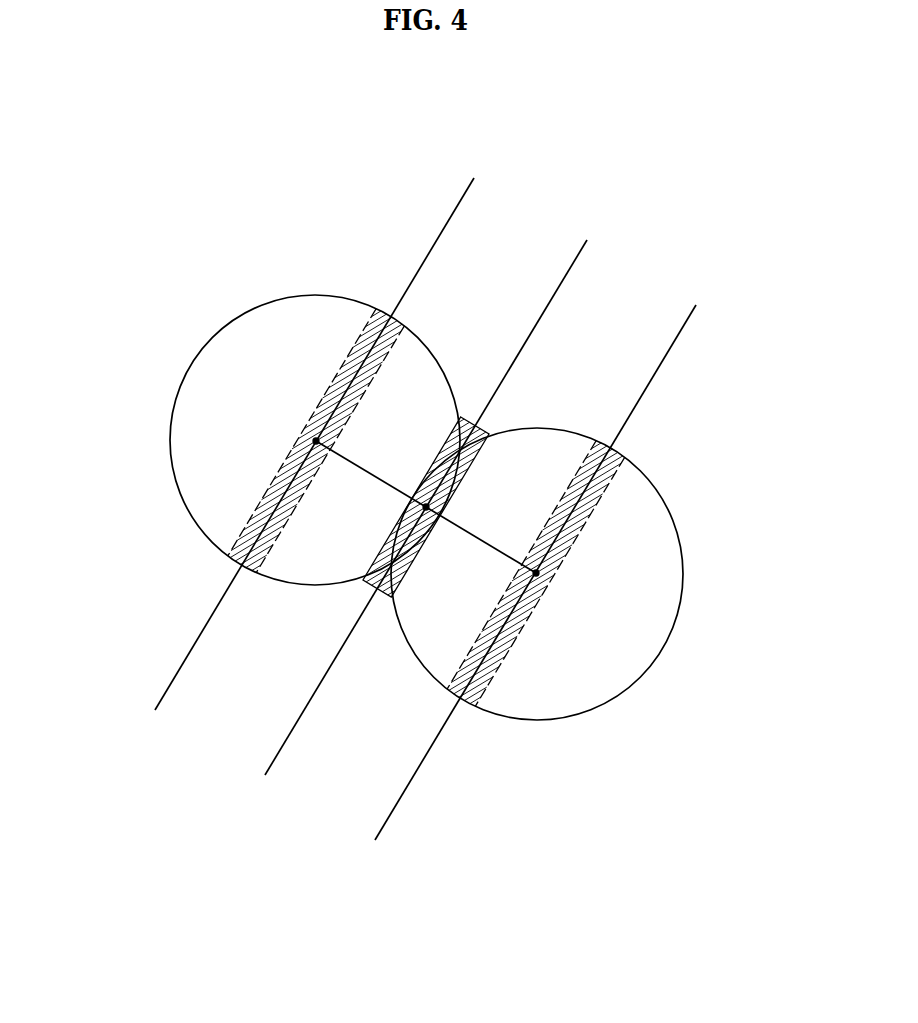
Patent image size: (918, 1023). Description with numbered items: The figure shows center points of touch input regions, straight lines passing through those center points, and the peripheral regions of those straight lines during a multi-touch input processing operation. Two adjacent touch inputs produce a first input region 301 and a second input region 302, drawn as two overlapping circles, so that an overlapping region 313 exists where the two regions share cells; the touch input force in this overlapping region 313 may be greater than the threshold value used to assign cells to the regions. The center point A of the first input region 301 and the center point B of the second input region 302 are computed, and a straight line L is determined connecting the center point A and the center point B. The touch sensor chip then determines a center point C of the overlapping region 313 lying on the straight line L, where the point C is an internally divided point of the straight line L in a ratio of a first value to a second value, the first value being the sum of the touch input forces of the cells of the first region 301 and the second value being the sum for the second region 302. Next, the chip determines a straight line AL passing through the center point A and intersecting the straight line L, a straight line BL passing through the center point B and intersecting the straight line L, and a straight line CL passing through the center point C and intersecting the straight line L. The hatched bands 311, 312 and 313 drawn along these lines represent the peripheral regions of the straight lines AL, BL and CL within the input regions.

The first input region 301 is at (197, 475).
The second input region 302 is at (648, 588).
The first hatched band along line AL 311 is at (350, 357).
The second hatched band along line BL 312 is at (600, 483).
The overlapping region 313 is at (441, 455).
The straight line AL is at (456, 208).
The straight line CL is at (566, 272).
The straight line BL is at (671, 347).
The straight line L is at (475, 537).
The center point A is at (316, 441).
The center point B is at (536, 573).
The center point C is at (426, 507).